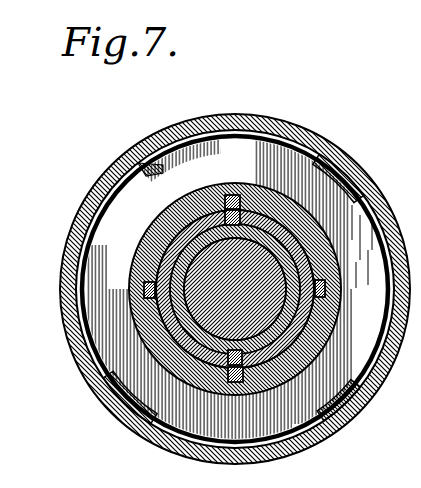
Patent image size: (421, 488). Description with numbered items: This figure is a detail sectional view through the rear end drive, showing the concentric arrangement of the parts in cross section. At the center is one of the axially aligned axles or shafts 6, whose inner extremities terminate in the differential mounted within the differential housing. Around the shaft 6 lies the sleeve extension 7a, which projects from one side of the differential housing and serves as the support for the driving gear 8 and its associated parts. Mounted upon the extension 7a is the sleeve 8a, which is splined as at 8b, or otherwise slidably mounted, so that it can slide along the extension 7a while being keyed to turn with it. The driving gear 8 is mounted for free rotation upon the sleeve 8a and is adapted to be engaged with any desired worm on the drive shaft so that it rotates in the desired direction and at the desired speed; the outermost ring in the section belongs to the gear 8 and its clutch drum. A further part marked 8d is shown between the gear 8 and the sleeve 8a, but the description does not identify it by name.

The axle shaft 6 is at (268, 263).
The sleeve extension 7a is at (290, 312).
The driving gear 8 is at (63, 277).
The sleeve 8a is at (168, 329).
The splines 8b is at (193, 396).
The band segments 8d is at (290, 170).